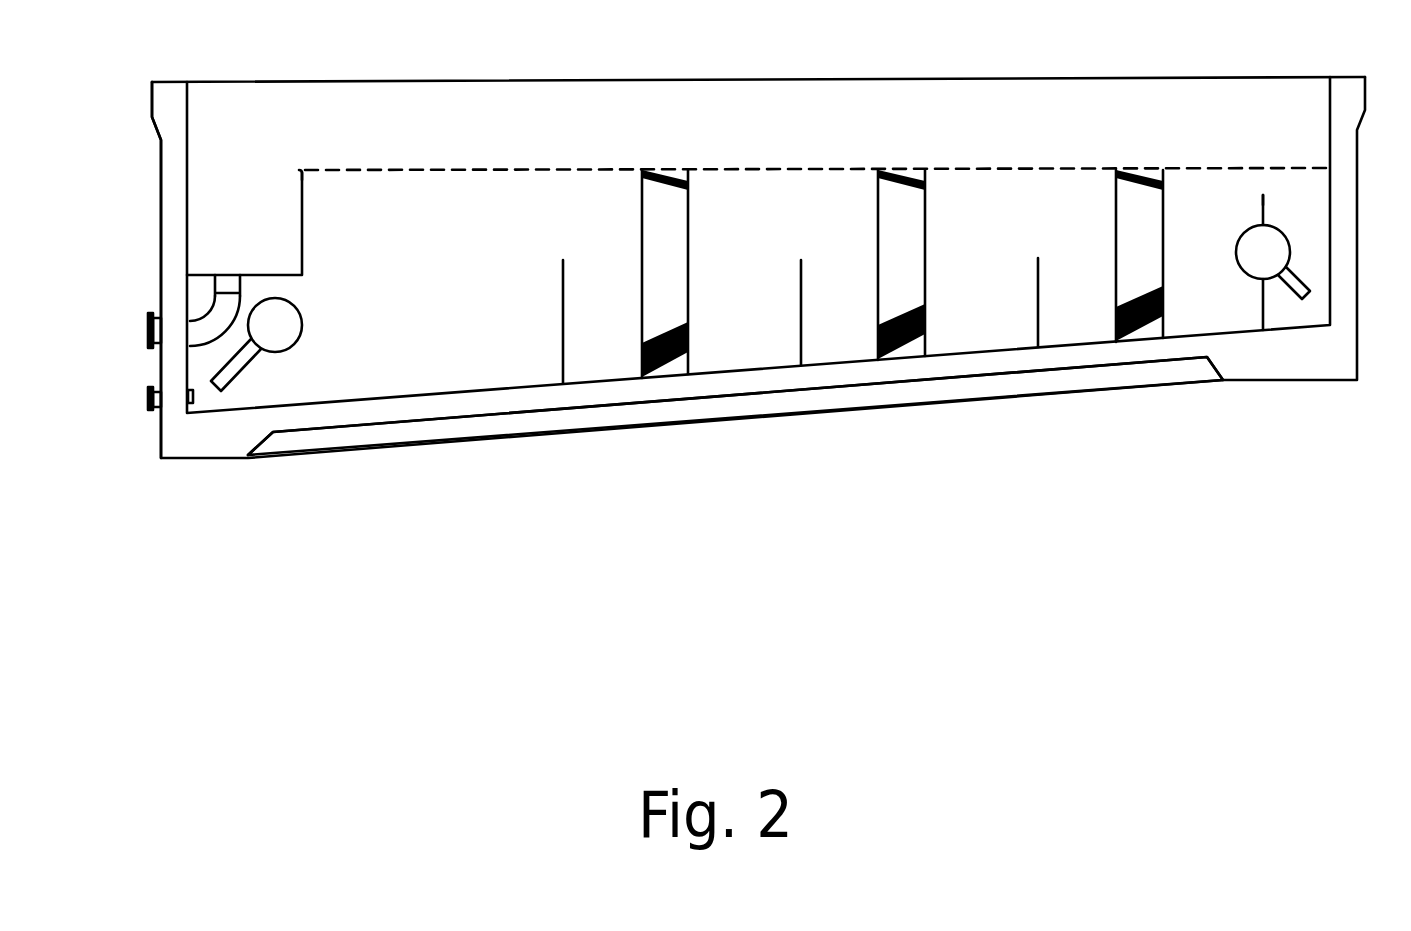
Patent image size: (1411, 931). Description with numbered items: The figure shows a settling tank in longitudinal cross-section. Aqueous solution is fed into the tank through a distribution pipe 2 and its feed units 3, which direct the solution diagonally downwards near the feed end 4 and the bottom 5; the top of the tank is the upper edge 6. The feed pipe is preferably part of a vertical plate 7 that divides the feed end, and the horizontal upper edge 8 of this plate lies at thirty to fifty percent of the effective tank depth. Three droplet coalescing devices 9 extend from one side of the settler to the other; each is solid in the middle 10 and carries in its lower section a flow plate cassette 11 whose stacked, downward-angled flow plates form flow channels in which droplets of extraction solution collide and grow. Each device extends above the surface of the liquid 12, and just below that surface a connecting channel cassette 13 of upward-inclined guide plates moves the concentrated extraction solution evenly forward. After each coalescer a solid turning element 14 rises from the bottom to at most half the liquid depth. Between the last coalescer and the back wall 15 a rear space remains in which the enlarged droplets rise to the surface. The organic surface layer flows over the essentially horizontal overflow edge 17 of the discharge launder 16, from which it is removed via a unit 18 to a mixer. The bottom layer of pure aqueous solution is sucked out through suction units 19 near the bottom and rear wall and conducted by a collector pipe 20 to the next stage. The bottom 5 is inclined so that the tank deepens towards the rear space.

The distribution pipe 2 is at (1273, 238).
The feed units 3 is at (1291, 273).
The feed end 4 is at (1354, 190).
The bottom 5 is at (1200, 332).
The upper edge 6 is at (1007, 78).
The vertical plate 7 is at (1264, 205).
The horizontal upper edge 8 is at (1263, 200).
The droplet coalescing device 9 is at (688, 197).
The middle 10 is at (652, 258).
The flow plate cassette 11 is at (688, 325).
The surface of the liquid 12 is at (390, 170).
The connecting channel cassette 13 is at (640, 185).
The turning element 14 is at (563, 312).
The back wall 15 is at (168, 175).
The discharge launder 16 is at (302, 250).
The overflow edge 17 is at (302, 172).
The unit 18 is at (202, 328).
The suction units 19 is at (237, 372).
The collector pipe 20 is at (292, 330).